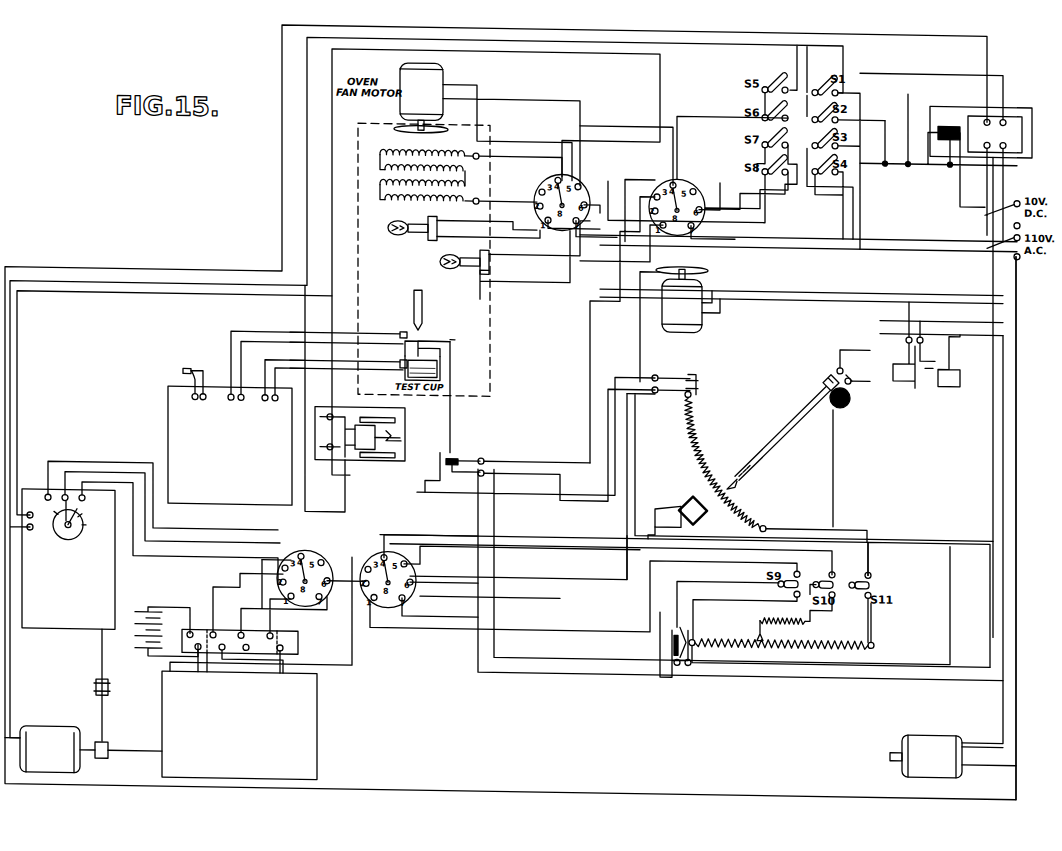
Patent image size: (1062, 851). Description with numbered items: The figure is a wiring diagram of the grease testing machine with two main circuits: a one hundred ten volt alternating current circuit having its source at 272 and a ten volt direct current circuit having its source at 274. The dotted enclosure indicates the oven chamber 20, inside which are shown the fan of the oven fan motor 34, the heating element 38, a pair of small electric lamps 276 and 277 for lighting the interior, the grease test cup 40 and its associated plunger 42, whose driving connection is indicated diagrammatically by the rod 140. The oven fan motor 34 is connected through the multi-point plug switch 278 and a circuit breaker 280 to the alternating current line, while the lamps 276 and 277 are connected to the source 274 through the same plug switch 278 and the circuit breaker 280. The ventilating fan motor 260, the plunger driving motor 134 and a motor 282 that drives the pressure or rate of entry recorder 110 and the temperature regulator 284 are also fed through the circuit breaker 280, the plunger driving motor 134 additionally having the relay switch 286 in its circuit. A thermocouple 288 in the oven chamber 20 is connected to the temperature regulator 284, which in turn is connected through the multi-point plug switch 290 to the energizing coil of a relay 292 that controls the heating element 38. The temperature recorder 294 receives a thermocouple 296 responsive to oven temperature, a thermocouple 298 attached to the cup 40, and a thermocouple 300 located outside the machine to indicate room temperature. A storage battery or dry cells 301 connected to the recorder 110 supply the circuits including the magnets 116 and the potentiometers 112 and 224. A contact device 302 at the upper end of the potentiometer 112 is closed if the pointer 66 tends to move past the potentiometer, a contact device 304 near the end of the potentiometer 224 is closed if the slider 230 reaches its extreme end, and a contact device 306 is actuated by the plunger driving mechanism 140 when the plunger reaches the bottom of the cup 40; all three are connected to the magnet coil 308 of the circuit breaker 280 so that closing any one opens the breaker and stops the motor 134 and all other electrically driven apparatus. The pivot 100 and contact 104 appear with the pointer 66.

The oven fan motor 34 is at (443, 88).
The heating element 38 is at (395, 200).
The electric lamp 276 is at (437, 230).
The electric lamp 277 is at (489, 263).
The multi-point plug switch 278 is at (655, 198).
The oven chamber 20 is at (490, 330).
The thermocouple 288 is at (422, 330).
The thermocouple 296 is at (400, 333).
The thermocouple 298 is at (398, 366).
The plunger 42 is at (440, 352).
The test cup 40 is at (440, 370).
The relay 292 is at (405, 428).
The rod 140 is at (450, 430).
The contact device 306 is at (462, 458).
The thermocouple 300 is at (187, 373).
The temperature recorder 294 is at (168, 432).
The temperature regulator 284 is at (105, 605).
The storage battery or dry cells 301 is at (133, 645).
The motor 282 is at (52, 768).
The pressure or rate of entry recorder 110 is at (317, 690).
The multi-point plug switch 290 is at (333, 596).
The ventilating fan motor 260 is at (662, 290).
The contact device 302 is at (698, 384).
The potentiometer 112 is at (692, 425).
The pointer 66 is at (775, 440).
The magnet 116 is at (690, 500).
The pivot 100 is at (826, 386).
The contact 104 is at (851, 372).
The relay switch 286 is at (905, 352).
The magnet coil 308 is at (948, 120).
The circuit breaker 280 is at (1012, 100).
The 10 volt direct current source 274 is at (1002, 218).
The 110 volt alternating current source 272 is at (1002, 247).
The contact device 304 is at (688, 615).
The slider 230 is at (757, 625).
The potentiometer 224 is at (848, 618).
The plunger driving motor 134 is at (905, 745).